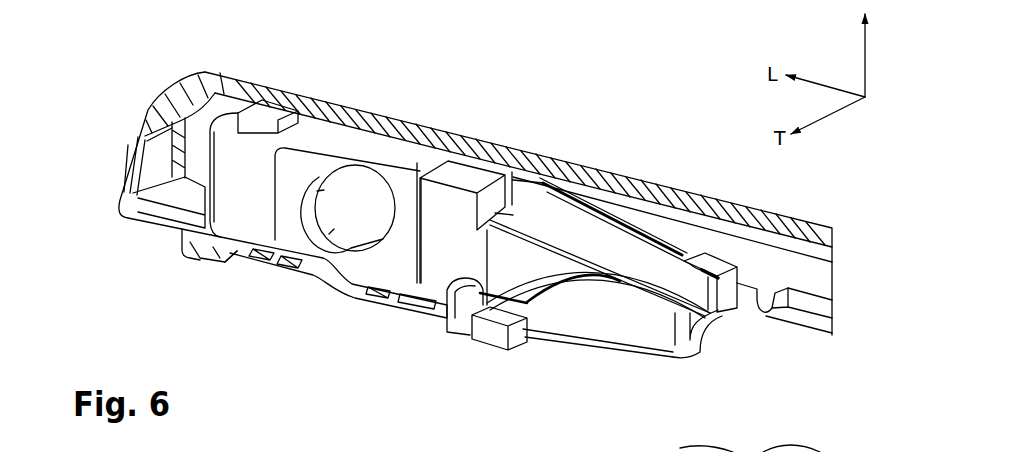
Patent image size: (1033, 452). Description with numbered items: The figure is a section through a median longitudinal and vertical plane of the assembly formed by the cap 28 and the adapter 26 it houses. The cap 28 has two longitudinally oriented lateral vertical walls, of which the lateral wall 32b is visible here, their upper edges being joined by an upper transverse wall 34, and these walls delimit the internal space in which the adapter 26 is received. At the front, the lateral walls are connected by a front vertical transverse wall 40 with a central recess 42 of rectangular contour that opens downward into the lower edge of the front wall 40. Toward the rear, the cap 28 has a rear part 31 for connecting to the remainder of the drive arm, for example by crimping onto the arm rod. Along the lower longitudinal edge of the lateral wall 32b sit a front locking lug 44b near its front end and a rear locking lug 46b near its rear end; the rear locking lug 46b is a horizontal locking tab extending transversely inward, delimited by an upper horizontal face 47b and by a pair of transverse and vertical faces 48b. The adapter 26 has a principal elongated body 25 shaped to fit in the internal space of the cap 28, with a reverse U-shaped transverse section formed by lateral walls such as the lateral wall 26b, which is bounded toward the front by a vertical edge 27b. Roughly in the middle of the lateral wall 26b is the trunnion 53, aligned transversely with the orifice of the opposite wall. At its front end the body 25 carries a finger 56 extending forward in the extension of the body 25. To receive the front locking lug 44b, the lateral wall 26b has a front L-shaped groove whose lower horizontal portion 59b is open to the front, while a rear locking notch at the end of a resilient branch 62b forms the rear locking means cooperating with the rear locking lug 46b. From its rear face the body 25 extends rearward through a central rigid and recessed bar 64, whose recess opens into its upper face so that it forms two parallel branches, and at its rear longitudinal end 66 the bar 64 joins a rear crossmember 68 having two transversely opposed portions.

The principal elongated body 25 is at (302, 284).
The adapter 26 is at (586, 353).
The lateral vertical and longitudinal wall 26b is at (252, 266).
The vertical edge 27b is at (172, 234).
The cap 28 is at (537, 147).
The rear part 31 is at (807, 323).
The lateral vertical wall 32b is at (150, 228).
The upper transverse wall 34 is at (440, 135).
The front vertical transverse wall 40 is at (130, 170).
The central recess 42 is at (155, 137).
The front locking lug 44b is at (201, 263).
The rear locking lug 46b is at (511, 353).
The upper horizontal face 47b is at (458, 285).
The transverse and vertical faces 48b is at (483, 337).
The trunnion 53 is at (359, 177).
The finger 56 is at (152, 155).
The lower horizontal portion 59b is at (220, 262).
The resilient branch 62b is at (633, 311).
The central rigid and recessed bar 64 is at (586, 234).
The rear longitudinal end 66 is at (698, 290).
The rear crossmember 68 is at (742, 278).